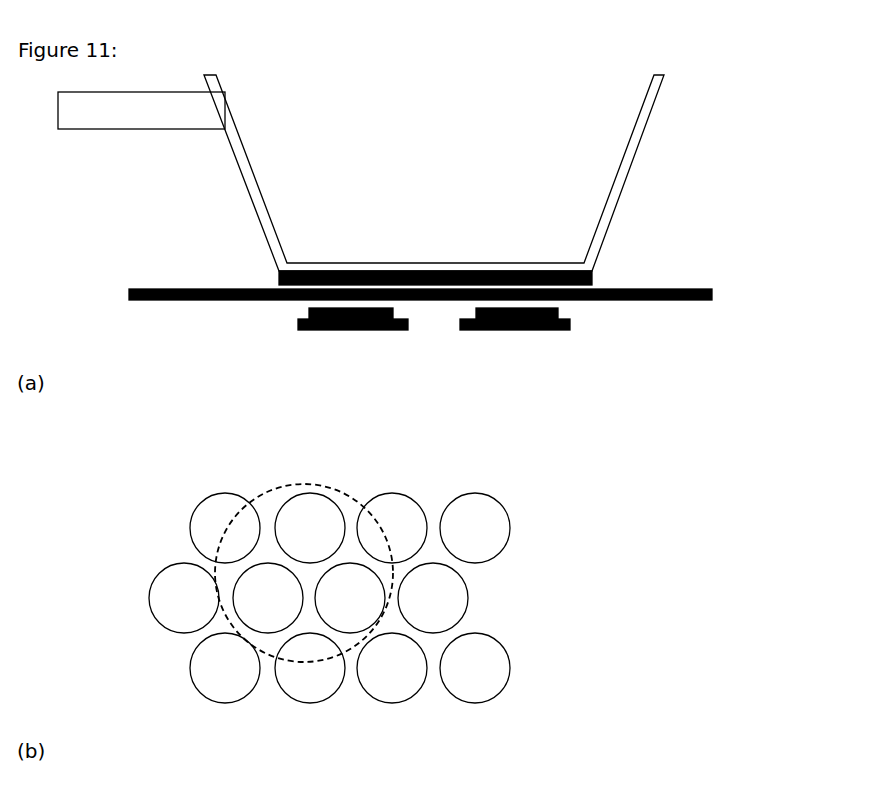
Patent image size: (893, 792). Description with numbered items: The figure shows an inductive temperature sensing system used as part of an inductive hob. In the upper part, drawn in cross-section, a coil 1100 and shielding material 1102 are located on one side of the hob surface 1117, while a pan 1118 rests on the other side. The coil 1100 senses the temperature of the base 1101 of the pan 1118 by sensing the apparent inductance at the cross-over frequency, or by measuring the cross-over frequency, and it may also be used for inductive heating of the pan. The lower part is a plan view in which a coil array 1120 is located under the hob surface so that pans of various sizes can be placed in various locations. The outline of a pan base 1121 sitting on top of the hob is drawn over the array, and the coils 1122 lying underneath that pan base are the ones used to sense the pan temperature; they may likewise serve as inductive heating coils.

The pan 1118 is at (630, 159).
The base 1101 is at (592, 275).
The hob surface 1117 is at (712, 298).
The coil 1100 is at (558, 313).
The shielding material 1102 is at (550, 329).
The coil array 1120 is at (493, 682).
The coils 1122 is at (350, 578).
The outline of a pan base 1121 is at (357, 648).